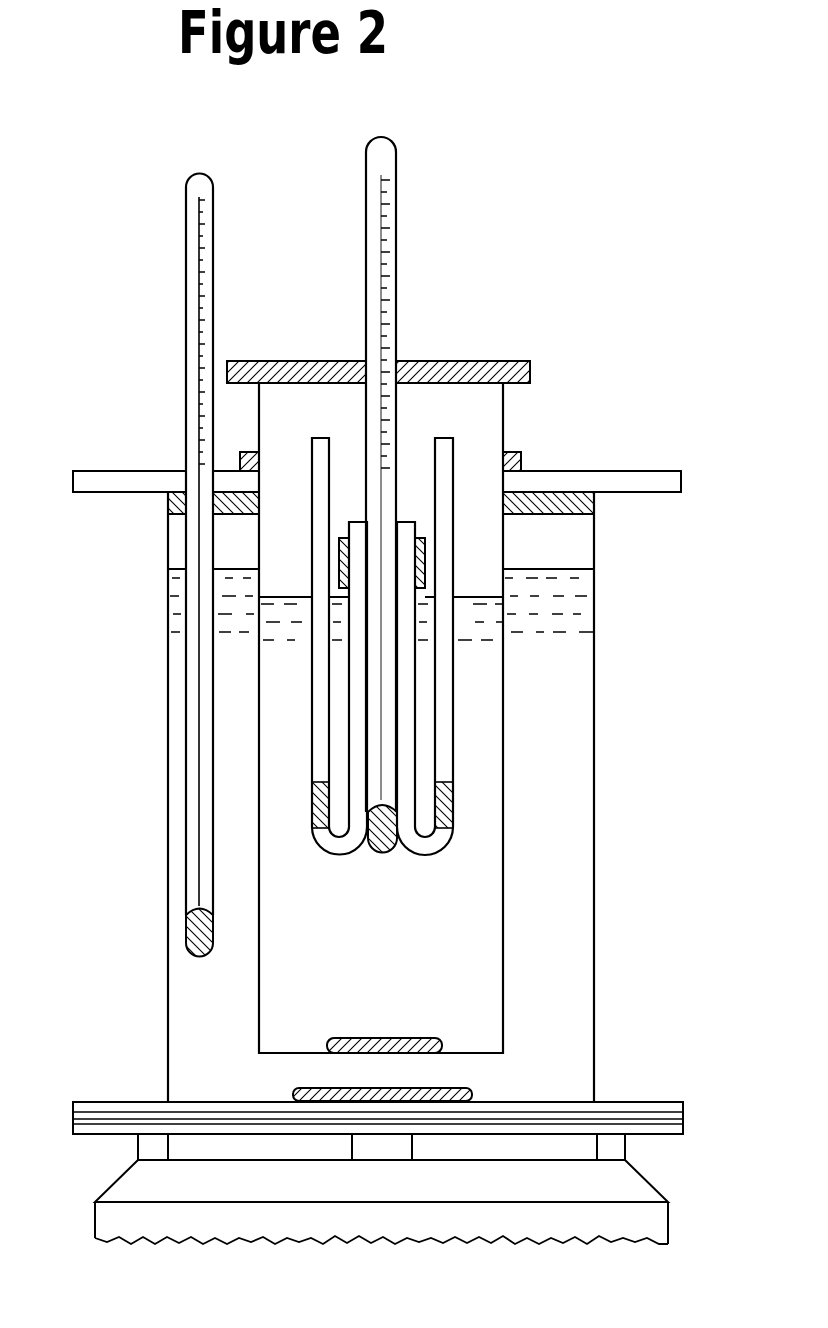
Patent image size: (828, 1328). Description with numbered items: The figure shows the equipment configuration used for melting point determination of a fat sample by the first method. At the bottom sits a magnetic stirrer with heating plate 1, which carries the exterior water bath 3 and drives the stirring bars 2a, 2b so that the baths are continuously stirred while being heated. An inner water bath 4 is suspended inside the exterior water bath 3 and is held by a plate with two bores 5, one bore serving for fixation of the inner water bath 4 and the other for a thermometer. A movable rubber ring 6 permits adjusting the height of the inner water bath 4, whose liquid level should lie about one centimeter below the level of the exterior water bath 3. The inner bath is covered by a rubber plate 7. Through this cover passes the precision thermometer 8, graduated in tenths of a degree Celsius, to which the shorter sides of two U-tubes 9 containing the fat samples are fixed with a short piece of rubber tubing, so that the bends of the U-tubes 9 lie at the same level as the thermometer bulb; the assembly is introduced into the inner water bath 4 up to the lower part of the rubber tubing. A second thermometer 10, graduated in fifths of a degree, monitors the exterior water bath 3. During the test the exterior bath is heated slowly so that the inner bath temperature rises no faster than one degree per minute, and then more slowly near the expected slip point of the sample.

The magnetic stirrer with heating plate 1 is at (383, 1173).
The stirring bar 2a is at (468, 1088).
The stirring bar 2b is at (394, 1036).
The exterior water bath 3 is at (243, 830).
The inner water bath 4 is at (395, 925).
The plate with two bores 5 is at (677, 480).
The movable rubber ring 6 is at (522, 460).
The rubber plate 7 is at (525, 361).
The thermometer 8 is at (395, 250).
The U-tube 9 is at (311, 452).
The thermometer for the exterior water bath 10 is at (211, 282).